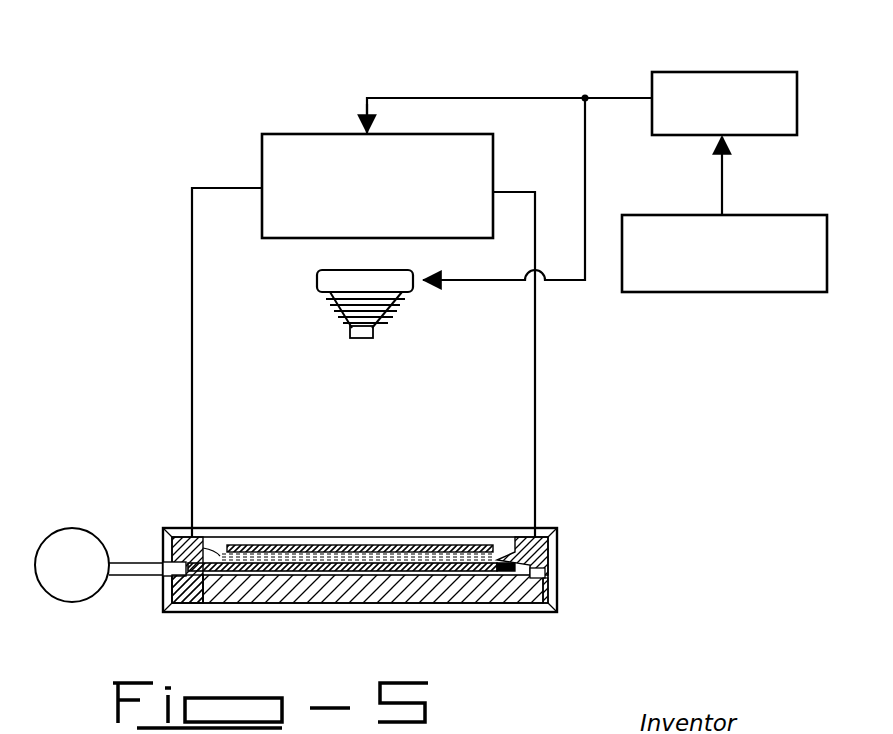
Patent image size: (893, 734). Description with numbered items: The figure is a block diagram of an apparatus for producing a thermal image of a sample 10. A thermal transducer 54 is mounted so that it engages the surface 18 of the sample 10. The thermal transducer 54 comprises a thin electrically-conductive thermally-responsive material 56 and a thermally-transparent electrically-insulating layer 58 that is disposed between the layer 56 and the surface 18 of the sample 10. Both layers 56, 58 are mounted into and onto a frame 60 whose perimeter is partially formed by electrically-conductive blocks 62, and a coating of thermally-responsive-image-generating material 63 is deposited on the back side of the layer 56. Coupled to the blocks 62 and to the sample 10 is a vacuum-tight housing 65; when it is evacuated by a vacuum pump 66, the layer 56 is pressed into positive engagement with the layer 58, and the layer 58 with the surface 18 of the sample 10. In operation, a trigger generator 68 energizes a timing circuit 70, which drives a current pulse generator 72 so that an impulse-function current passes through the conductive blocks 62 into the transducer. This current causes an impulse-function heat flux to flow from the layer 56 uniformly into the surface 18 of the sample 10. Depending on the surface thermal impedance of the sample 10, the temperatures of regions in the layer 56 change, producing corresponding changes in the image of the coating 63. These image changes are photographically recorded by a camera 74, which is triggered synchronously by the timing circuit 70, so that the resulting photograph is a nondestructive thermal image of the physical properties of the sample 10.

The sample 10 is at (320, 590).
The surface 18 is at (229, 590).
The thermal transducer 54 is at (368, 559).
The electrically-conductive thermally-responsive material 56 is at (415, 560).
The thermally-transparent electrically-insulating layer 58 is at (488, 560).
The frame 60 is at (163, 596).
The electrically-conductive blocks 62 is at (548, 548).
The thermally-responsive-image-generating material 63 is at (283, 545).
The vacuum-tight housing 65 is at (547, 595).
The vacuum pump 66 is at (86, 518).
The trigger generator 68 is at (804, 200).
The timing circuit 70 is at (727, 74).
The current pulse generator 72 is at (293, 140).
The camera 74 is at (317, 280).